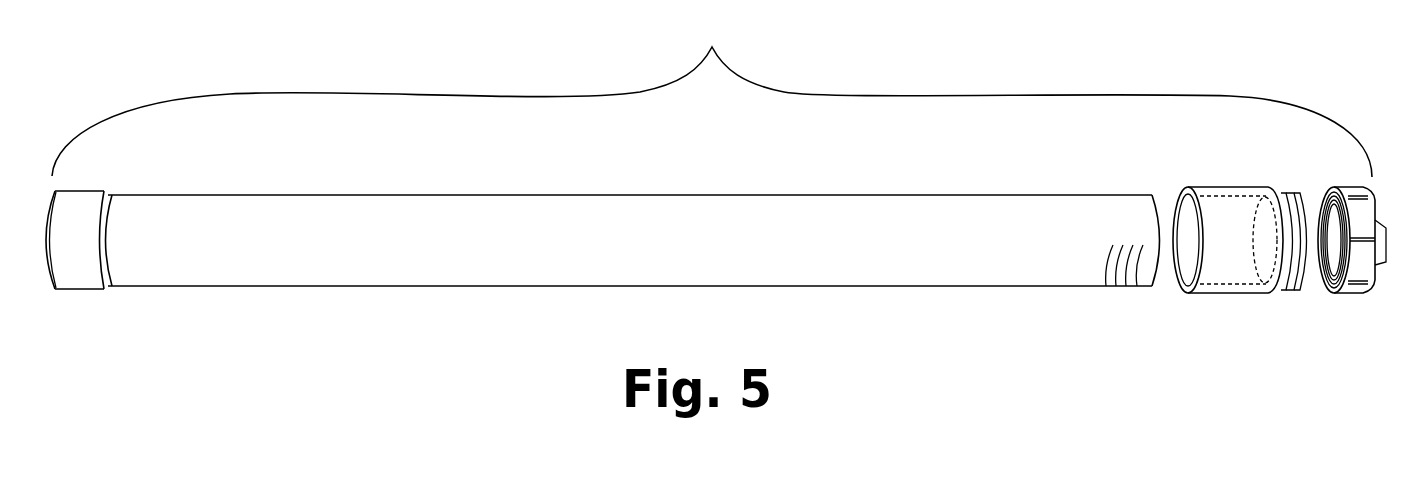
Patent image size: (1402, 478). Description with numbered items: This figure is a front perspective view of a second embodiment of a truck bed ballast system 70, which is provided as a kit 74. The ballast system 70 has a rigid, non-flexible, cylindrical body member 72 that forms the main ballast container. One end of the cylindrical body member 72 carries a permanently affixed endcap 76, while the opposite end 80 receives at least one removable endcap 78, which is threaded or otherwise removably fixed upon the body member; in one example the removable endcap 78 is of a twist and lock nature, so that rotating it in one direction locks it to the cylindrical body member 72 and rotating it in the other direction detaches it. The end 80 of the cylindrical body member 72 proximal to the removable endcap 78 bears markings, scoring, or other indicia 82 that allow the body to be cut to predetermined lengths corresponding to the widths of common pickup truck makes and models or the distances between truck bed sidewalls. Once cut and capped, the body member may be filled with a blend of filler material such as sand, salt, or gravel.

The ballast system 70 is at (712, 96).
The cylindrical body member 72 is at (510, 272).
The kit 74 is at (1052, 418).
The permanently affixed endcap 76 is at (82, 289).
The removable endcap 78 is at (1297, 288).
The end of cylindrical body member 80 is at (1157, 197).
The indicia 82 is at (1138, 273).